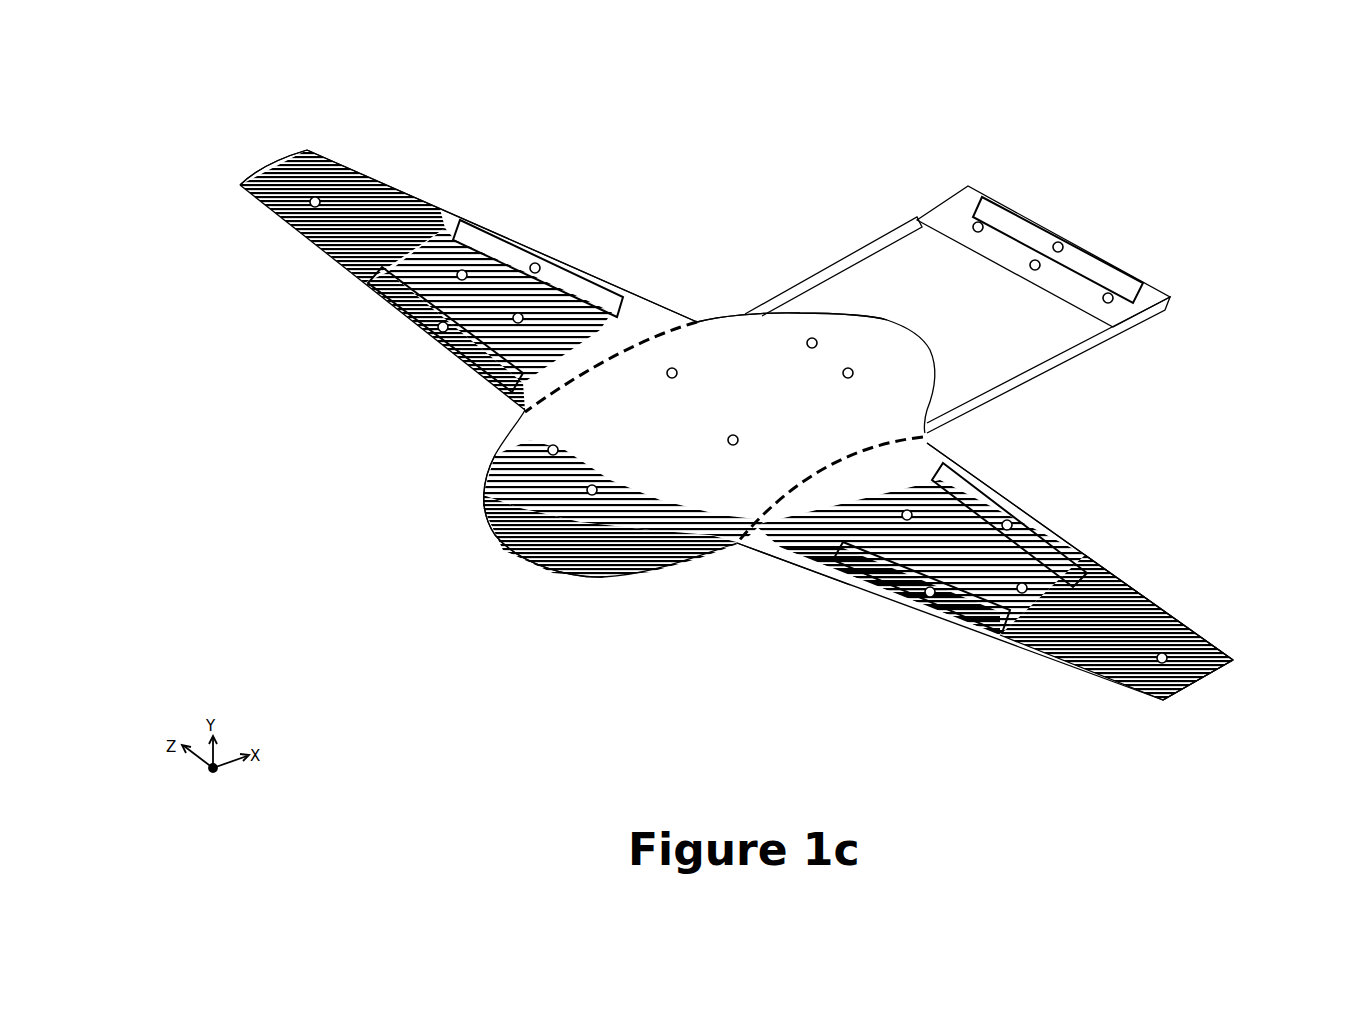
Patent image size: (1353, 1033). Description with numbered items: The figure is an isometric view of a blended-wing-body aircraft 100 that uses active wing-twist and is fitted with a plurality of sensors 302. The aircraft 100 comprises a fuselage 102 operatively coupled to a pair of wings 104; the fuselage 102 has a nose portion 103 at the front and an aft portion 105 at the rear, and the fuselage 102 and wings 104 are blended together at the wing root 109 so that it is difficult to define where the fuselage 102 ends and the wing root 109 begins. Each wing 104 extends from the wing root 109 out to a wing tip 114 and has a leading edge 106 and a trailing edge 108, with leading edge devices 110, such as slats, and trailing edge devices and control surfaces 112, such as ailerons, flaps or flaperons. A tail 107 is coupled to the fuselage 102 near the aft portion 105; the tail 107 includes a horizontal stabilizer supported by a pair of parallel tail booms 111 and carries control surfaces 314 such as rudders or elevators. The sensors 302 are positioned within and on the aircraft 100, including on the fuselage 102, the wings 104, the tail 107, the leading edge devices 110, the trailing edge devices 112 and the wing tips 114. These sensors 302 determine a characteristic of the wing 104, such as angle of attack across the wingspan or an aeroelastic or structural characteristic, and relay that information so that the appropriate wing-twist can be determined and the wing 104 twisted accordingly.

The BWB aircraft 100 is at (1267, 72).
The fuselage 102 is at (697, 448).
The nose portion 103 is at (487, 555).
The wings 104 is at (777, 245).
The aft portion 105 is at (933, 363).
The leading edge 106 is at (813, 565).
The tail 107 is at (967, 223).
The trailing edge 108 is at (1077, 547).
The wing root 109 is at (660, 322).
The leading edge devices 110 is at (423, 320).
The tail booms 111 is at (830, 260).
The trailing edge devices 112 is at (543, 263).
The wing tip 114 is at (255, 178).
The wing-twist sensors 302 is at (738, 493).
The tail control surfaces 314 is at (1073, 240).